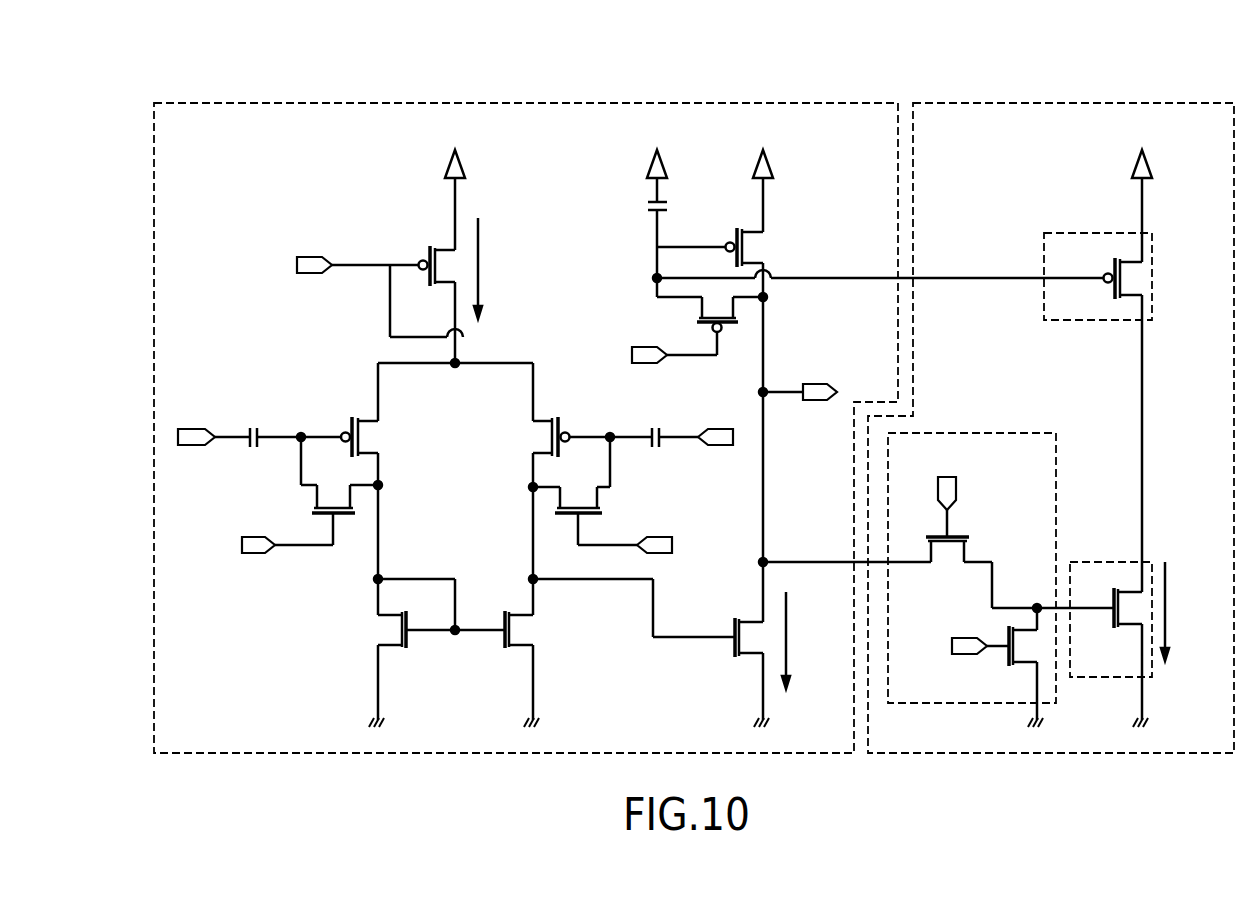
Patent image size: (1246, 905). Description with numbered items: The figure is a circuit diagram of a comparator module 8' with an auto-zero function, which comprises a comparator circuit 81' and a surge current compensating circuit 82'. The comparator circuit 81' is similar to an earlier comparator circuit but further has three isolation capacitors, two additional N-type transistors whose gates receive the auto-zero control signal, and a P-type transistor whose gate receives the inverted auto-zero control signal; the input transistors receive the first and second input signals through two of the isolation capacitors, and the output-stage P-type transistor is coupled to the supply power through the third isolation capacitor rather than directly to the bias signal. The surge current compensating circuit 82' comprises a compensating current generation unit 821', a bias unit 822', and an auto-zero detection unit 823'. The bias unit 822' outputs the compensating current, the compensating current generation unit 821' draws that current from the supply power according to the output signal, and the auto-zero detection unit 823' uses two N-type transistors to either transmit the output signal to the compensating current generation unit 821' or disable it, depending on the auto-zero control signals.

The comparator module 8' is at (694, 392).
The comparator circuit 81' is at (628, 393).
The surge current compensating circuit 82' is at (1051, 394).
The compensating current generation unit 821' is at (1111, 586).
The bias unit 822' is at (1098, 243).
The auto-zero detection unit 823' is at (1001, 543).